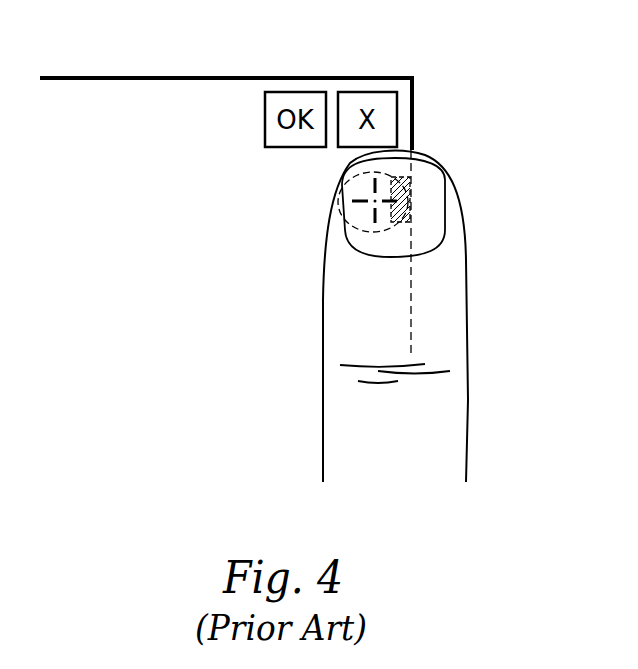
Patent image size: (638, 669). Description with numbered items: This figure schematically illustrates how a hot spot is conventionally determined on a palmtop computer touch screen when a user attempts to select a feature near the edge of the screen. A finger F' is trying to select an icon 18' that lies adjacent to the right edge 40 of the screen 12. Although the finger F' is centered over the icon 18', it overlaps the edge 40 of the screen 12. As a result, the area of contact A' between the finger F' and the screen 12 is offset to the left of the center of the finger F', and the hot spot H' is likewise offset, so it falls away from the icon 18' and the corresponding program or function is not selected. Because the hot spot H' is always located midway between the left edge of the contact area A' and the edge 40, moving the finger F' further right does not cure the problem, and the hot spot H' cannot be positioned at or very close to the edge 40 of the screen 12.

The screen 12 is at (175, 147).
The finger F' is at (424, 316).
The area of contact A' is at (340, 202).
The hot spot H' is at (346, 223).
The icon 18' is at (441, 178).
The edge 40 is at (412, 294).